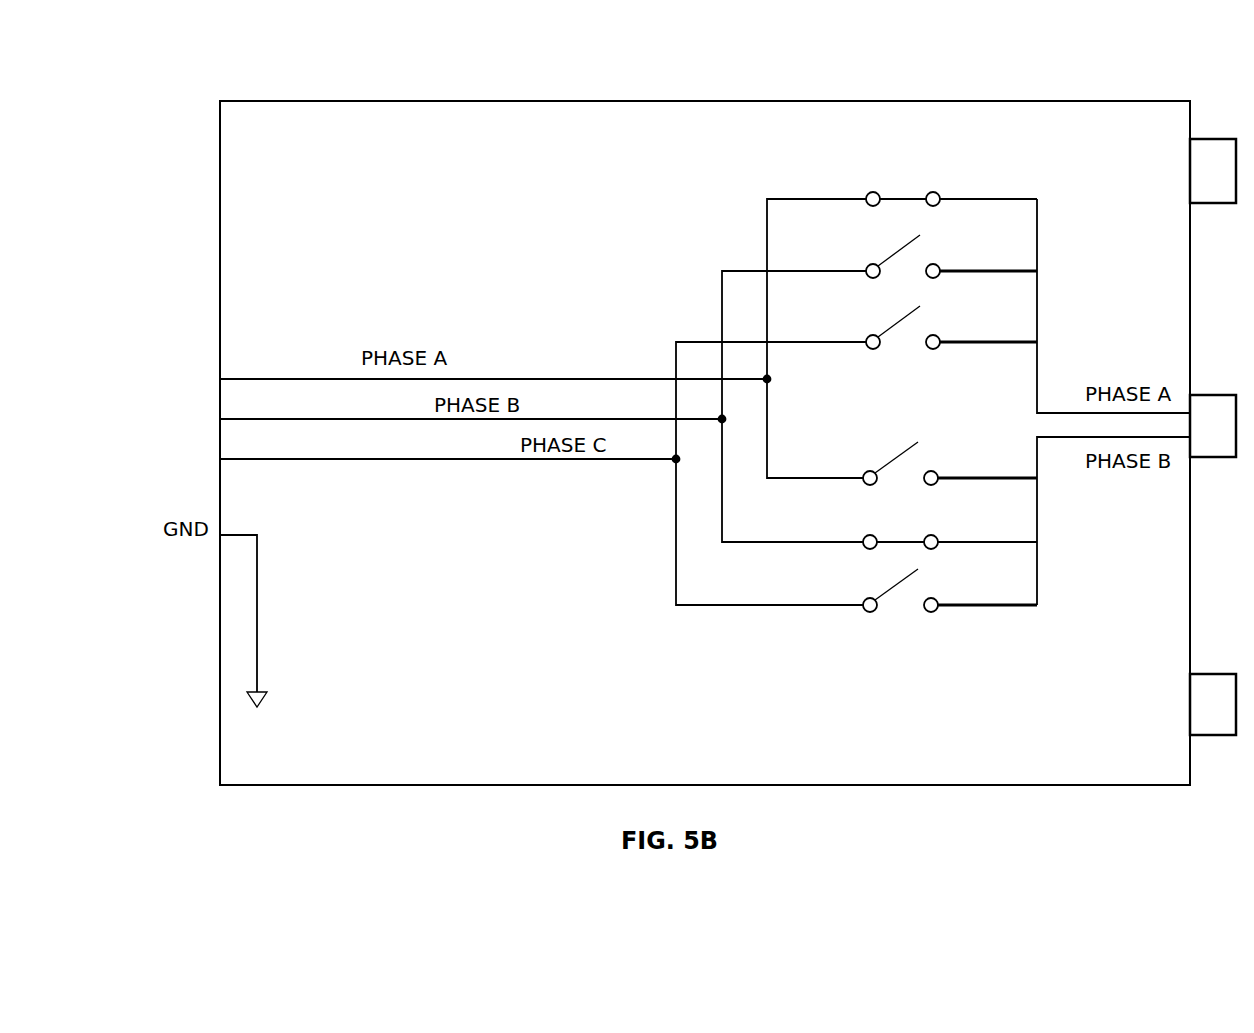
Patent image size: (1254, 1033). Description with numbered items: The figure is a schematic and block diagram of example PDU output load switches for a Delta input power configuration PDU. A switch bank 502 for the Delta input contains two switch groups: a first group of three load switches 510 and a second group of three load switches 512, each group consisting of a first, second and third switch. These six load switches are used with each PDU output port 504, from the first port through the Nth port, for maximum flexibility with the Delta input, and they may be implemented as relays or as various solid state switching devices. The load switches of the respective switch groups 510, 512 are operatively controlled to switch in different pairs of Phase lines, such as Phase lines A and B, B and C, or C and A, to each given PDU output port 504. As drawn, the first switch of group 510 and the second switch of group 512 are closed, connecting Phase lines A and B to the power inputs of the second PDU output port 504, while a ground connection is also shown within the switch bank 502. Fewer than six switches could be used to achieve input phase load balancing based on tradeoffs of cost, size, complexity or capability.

The switch bank 502 is at (683, 63).
The PDU output port 504 is at (1218, 125).
The load switches 510 is at (903, 169).
The load switches 512 is at (898, 419).